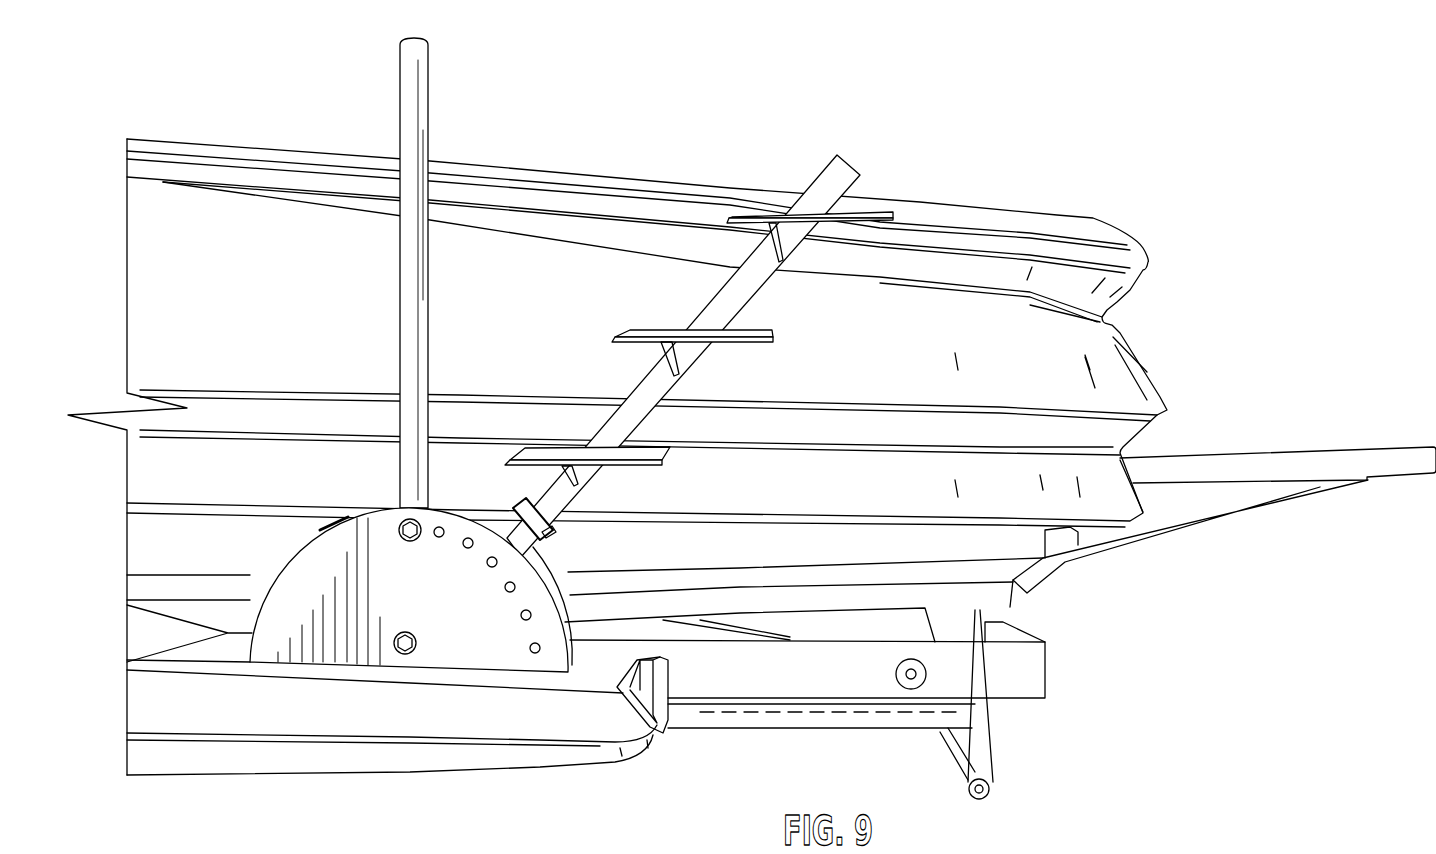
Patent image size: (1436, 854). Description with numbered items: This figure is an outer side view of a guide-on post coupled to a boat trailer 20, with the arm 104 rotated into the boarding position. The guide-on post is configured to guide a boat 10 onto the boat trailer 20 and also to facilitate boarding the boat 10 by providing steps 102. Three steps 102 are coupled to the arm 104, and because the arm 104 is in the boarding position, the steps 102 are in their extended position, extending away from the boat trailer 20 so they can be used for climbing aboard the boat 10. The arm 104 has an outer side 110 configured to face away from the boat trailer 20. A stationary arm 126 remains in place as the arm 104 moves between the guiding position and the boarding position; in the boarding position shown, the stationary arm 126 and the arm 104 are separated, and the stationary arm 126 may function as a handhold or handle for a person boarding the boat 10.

The boat 10 is at (927, 265).
The boat trailer 20 is at (1003, 668).
The steps 102 is at (750, 215).
The arm 104 is at (825, 188).
The outer side 110 is at (555, 498).
The stationary arm 126 is at (415, 88).